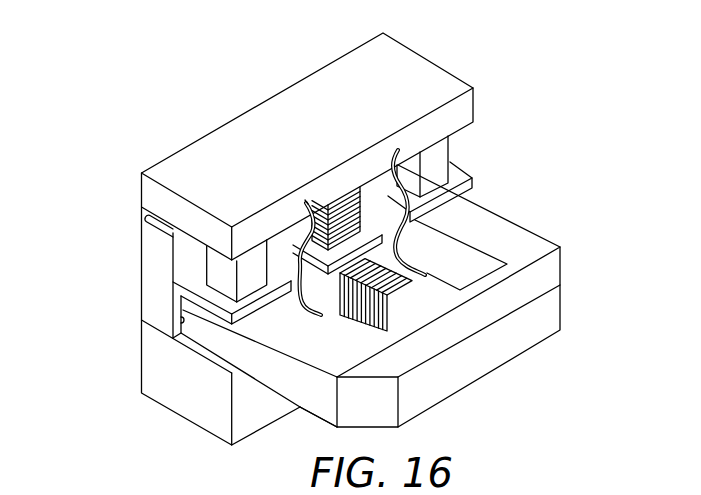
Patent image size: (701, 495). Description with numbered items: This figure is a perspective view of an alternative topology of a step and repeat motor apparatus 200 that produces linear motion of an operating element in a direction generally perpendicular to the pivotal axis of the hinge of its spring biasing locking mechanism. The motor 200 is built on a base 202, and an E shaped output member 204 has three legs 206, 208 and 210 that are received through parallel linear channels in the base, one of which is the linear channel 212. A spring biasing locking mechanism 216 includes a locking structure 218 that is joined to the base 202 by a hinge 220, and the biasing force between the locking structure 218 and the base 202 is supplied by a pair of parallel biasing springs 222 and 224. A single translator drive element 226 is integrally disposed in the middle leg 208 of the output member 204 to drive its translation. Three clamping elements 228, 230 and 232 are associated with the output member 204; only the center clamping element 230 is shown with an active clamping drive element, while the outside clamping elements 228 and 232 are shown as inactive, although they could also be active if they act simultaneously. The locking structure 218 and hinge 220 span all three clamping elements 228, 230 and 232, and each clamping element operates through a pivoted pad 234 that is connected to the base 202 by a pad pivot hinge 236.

The step and repeat motor apparatus 200 is at (497, 68).
The base 202 is at (170, 390).
The E shaped output member 204 is at (413, 400).
The leg 206 is at (310, 337).
The middle leg 208 is at (422, 298).
The leg 210 is at (497, 227).
The linear channel 212 is at (182, 327).
The spring biasing locking mechanism 216 is at (270, 155).
The locking structure 218 is at (308, 146).
The hinge 220 is at (147, 218).
The biasing spring 222 is at (300, 232).
The biasing spring 224 is at (432, 160).
The translator drive element 226 is at (363, 316).
The clamping element 228 is at (218, 282).
The center clamping element 230 is at (337, 207).
The clamping element 232 is at (445, 183).
The pivoted pad 234 is at (176, 345).
The pad pivot hinge 236 is at (176, 289).